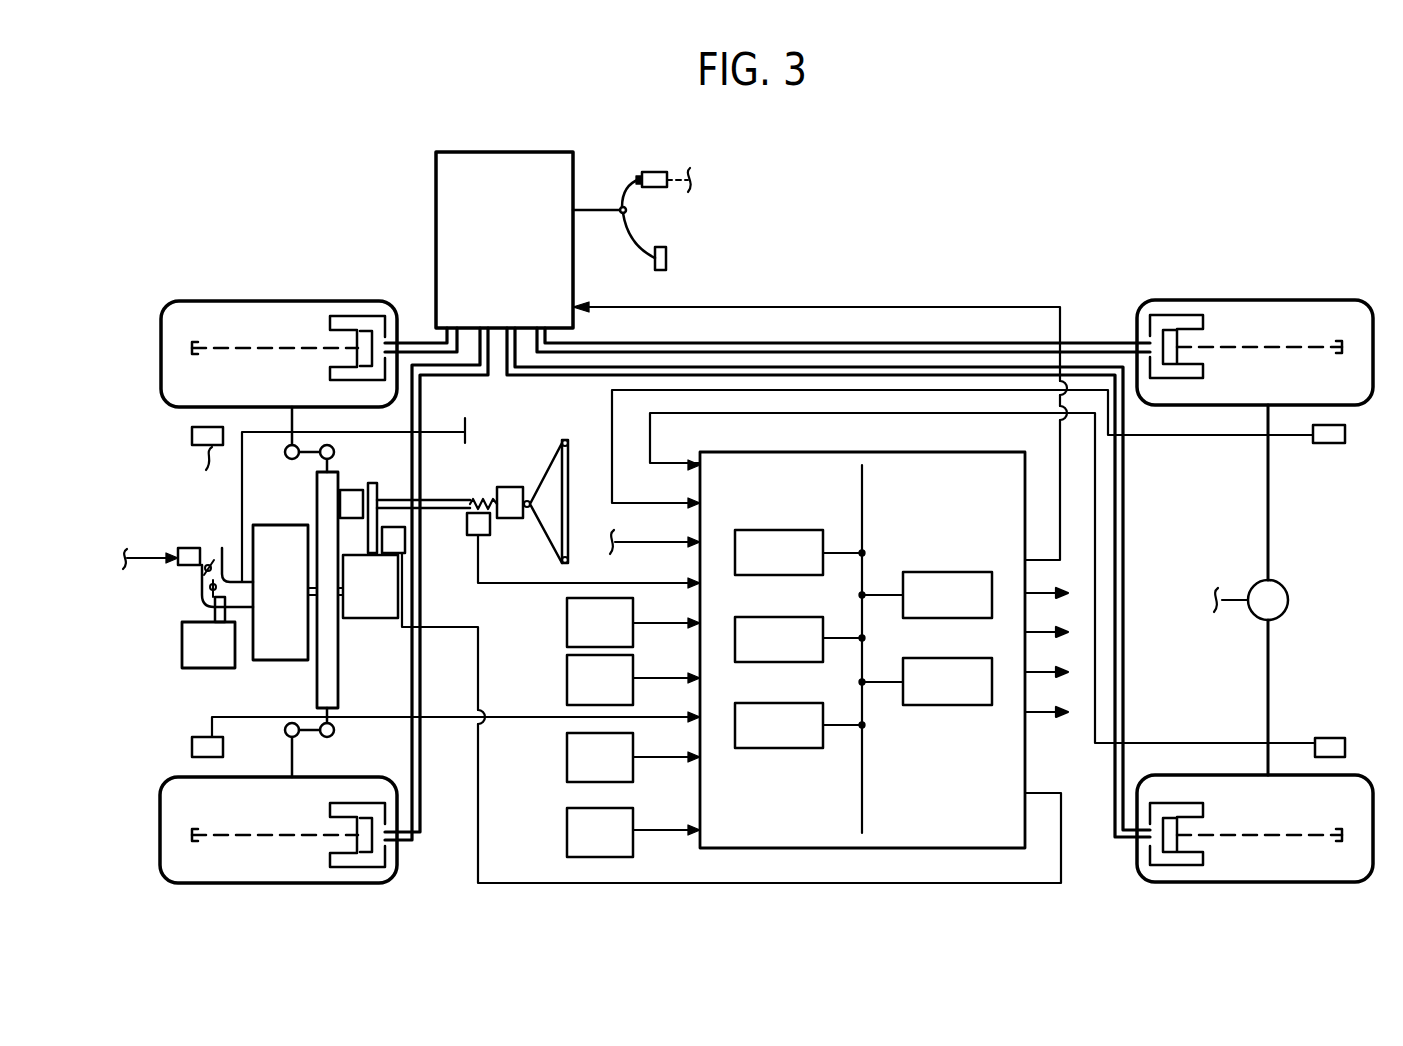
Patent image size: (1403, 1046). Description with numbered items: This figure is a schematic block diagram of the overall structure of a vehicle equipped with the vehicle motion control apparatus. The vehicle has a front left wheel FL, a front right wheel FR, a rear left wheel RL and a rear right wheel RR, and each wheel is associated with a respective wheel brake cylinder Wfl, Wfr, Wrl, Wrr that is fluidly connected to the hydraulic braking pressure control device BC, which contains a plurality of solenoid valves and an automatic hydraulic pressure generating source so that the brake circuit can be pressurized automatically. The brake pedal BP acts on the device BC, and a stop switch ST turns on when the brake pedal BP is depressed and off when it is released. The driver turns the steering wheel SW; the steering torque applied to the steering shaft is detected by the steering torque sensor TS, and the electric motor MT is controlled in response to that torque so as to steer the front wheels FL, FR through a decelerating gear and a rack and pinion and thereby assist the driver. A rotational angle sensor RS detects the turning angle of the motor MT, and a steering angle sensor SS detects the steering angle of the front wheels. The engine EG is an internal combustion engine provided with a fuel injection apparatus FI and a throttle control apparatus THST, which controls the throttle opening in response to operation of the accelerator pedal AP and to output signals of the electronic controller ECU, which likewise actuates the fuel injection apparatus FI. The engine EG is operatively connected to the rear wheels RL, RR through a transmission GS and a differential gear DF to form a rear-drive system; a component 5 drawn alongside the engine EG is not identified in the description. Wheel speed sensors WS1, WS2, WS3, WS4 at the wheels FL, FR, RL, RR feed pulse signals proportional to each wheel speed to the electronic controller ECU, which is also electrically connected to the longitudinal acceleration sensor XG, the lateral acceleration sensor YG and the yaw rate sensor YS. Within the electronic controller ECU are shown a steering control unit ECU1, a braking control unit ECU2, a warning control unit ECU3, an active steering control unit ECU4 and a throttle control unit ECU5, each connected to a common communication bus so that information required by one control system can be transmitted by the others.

The hydraulic braking pressure control device BC is at (436, 200).
The front right wheel FR is at (200, 301).
The front left wheel FL is at (199, 884).
The rear right wheel RR is at (1275, 300).
The rear left wheel RL is at (1283, 883).
The wheel brake cylinder Wfr is at (372, 330).
The wheel brake cylinder Wfl is at (369, 857).
The wheel brake cylinder Wrr is at (1163, 322).
The wheel brake cylinder Wrl is at (1165, 855).
The stop switch ST is at (655, 172).
The brake pedal BP is at (636, 246).
The electronic controller ECU is at (752, 592).
The steering control unit ECU1 is at (800, 552).
The braking control unit ECU2 is at (800, 639).
The warning control unit ECU3 is at (800, 725).
The active steering control unit ECU4 is at (925, 595).
The throttle control unit ECU5 is at (925, 681).
The longitudinal acceleration sensor XG is at (633, 622).
The lateral acceleration sensor YG is at (633, 680).
The yaw rate sensor YS is at (633, 757).
The rotational angle sensor RS is at (633, 832).
The steering wheel SW is at (565, 440).
The steering torque sensor TS is at (490, 527).
The EPS motor MT is at (405, 538).
The steering angle sensor SS is at (343, 492).
The shaft 5 is at (317, 683).
The transmission GS is at (370, 586).
The engine EG is at (292, 537).
The accelerator pedal AP is at (467, 419).
The throttle control apparatus THST is at (182, 546).
The fuel injection apparatus FI is at (208, 624).
The wheel speed sensor WS1 is at (200, 750).
The wheel speed sensor WS2 is at (192, 434).
The wheel speed sensor WS3 is at (1334, 744).
The wheel speed sensor WS4 is at (1323, 443).
The differential gear DF is at (1251, 590).